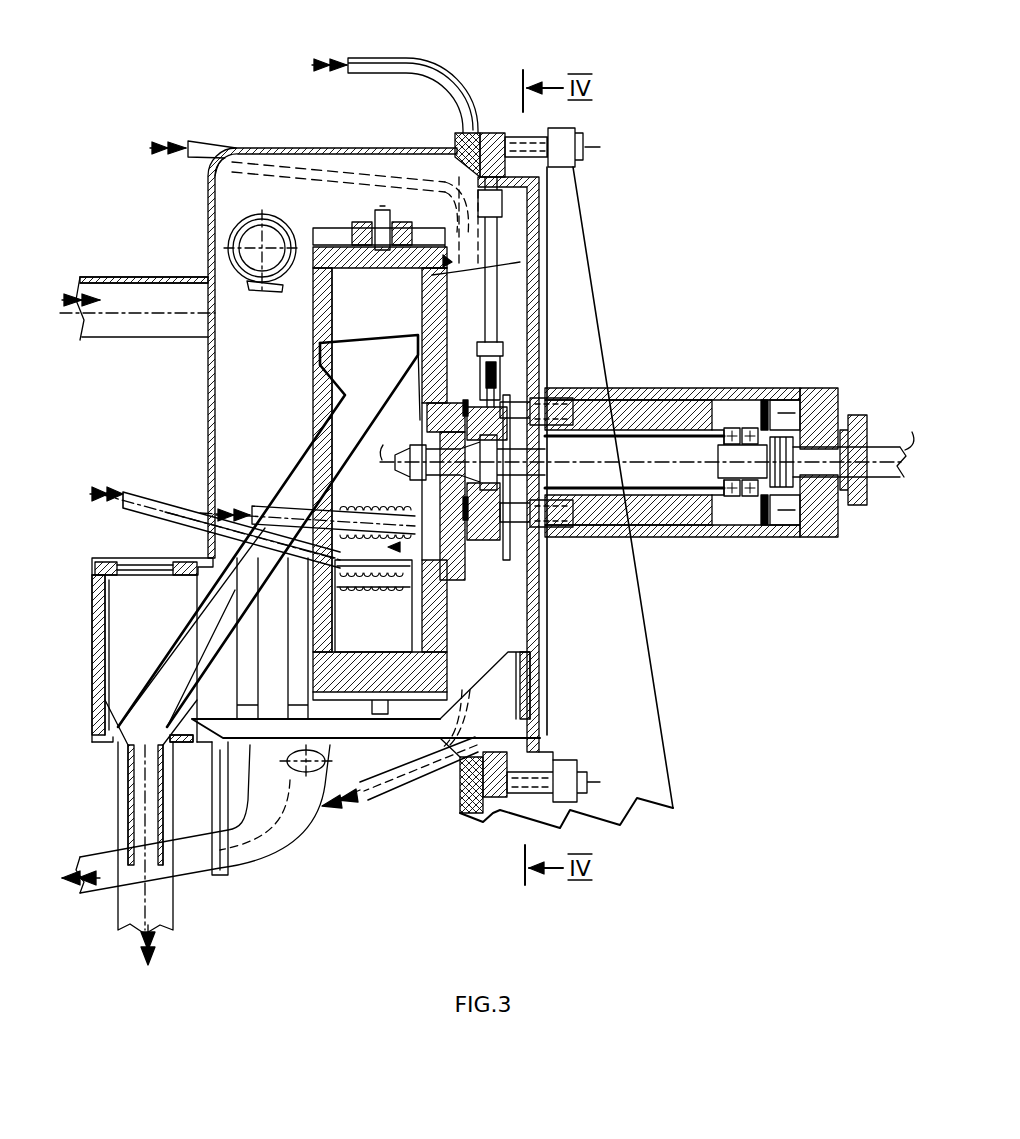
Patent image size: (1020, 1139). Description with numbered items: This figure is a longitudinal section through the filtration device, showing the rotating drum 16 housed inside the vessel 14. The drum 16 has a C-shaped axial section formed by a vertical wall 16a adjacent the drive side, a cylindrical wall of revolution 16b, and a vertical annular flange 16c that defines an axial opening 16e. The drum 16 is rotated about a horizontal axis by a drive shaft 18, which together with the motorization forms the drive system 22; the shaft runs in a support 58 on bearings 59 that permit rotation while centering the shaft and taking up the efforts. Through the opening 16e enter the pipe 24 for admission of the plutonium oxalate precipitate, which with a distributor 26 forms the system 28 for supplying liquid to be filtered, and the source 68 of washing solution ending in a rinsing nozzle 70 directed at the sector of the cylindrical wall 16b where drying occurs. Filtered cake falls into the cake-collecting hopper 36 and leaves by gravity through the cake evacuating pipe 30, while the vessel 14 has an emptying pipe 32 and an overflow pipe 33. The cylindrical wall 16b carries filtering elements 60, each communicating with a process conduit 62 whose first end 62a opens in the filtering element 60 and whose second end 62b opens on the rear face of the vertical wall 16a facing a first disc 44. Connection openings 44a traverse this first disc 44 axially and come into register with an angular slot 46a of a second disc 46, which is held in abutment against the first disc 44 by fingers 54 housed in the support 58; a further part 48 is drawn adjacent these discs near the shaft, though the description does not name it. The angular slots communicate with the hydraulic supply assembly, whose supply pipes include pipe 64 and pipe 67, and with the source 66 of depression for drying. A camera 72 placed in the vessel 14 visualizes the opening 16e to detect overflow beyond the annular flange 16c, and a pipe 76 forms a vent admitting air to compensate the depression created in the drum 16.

The vessel 14 is at (207, 186).
The drum 16 is at (470, 276).
The vertical wall 16a is at (442, 640).
The cylindrical wall of revolution 16b is at (333, 678).
The vertical annular flange 16c is at (320, 633).
The axial opening 16e is at (210, 555).
The drive shaft 18 is at (892, 477).
The drive system 22 is at (826, 362).
The pipe for admission of the precipitate 24 is at (143, 490).
The distributor 26 is at (380, 590).
The system for supplying liquid to be filtered 28 is at (446, 598).
The cake evacuating pipe 30 is at (153, 820).
The pipe for emptying the vessel 32 is at (230, 878).
The pipe for evacuating the overflow 33 is at (100, 890).
The cake-collecting hopper 36 is at (322, 444).
The first disc 44 is at (470, 565).
The connection opening 44a is at (463, 345).
The second disc 46 is at (478, 536).
The angular filtration slot 46a is at (503, 356).
The spacer 48 is at (510, 522).
The finger 54 is at (517, 403).
The support 58 is at (702, 527).
The bearing 59 is at (733, 428).
The filtering element 60 is at (397, 248).
The process conduit 62 is at (440, 316).
The first end of the process conduit 62a is at (450, 262).
The second end of the process conduit 62b is at (418, 428).
The supply pipe 64 is at (390, 58).
The source of depression for drying 66 is at (397, 790).
The supply pipe 67 is at (210, 142).
The source of solution for washing the cake 68 is at (258, 508).
The rinsing nozzle 70 is at (340, 505).
The camera 72 is at (245, 236).
The pipe 76 is at (128, 272).